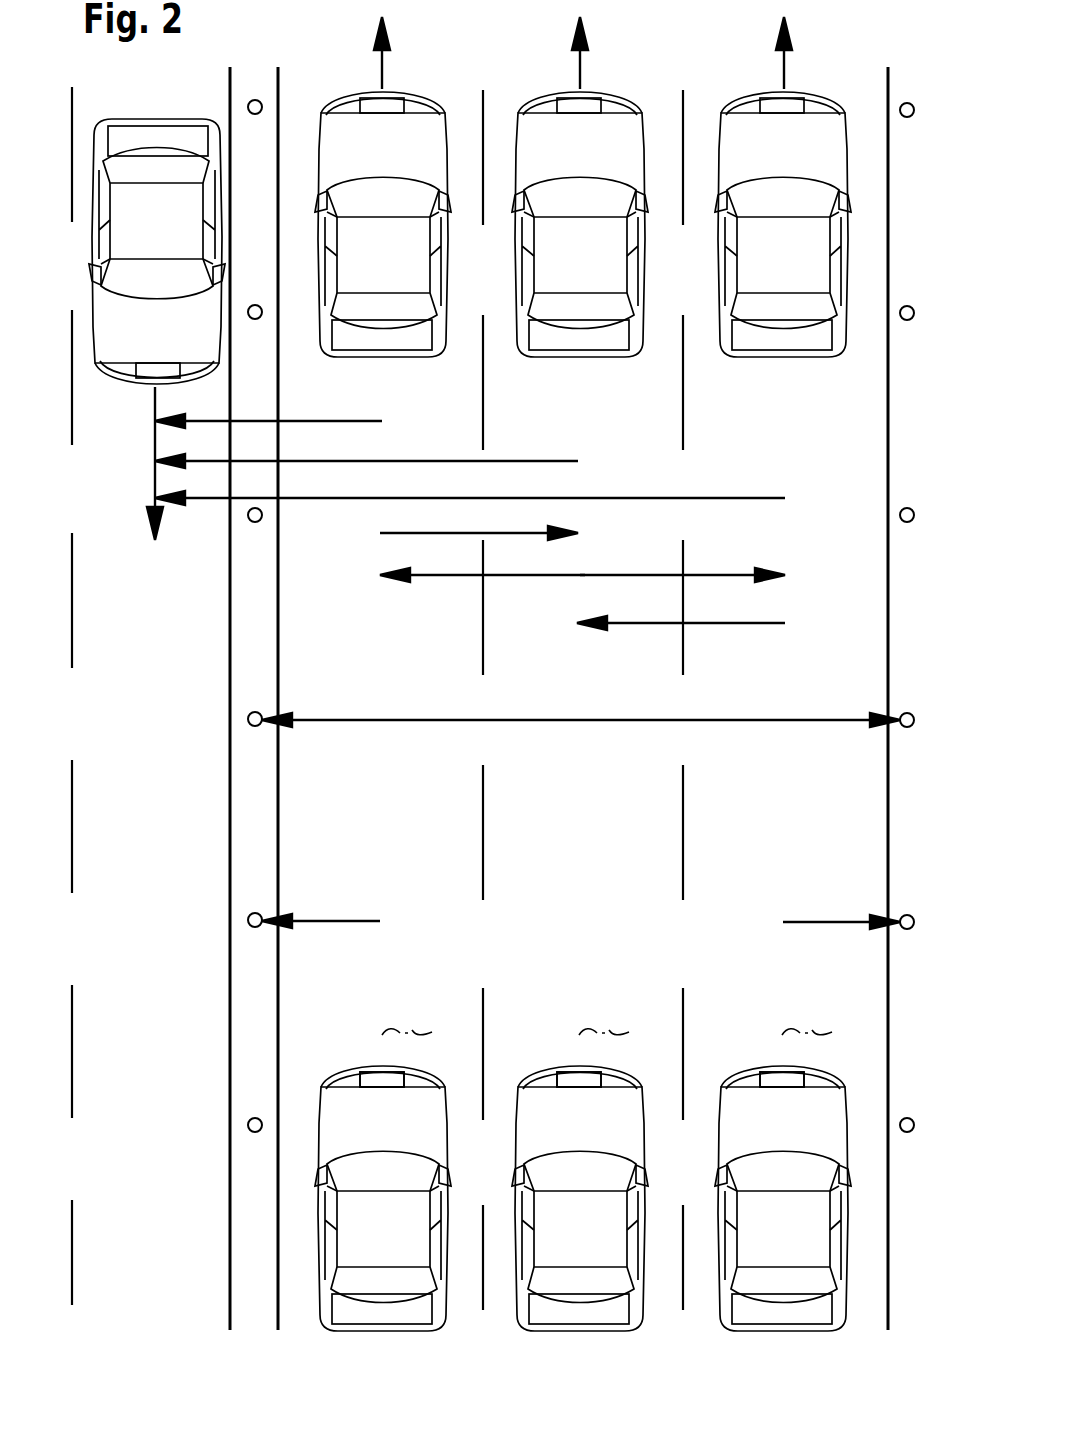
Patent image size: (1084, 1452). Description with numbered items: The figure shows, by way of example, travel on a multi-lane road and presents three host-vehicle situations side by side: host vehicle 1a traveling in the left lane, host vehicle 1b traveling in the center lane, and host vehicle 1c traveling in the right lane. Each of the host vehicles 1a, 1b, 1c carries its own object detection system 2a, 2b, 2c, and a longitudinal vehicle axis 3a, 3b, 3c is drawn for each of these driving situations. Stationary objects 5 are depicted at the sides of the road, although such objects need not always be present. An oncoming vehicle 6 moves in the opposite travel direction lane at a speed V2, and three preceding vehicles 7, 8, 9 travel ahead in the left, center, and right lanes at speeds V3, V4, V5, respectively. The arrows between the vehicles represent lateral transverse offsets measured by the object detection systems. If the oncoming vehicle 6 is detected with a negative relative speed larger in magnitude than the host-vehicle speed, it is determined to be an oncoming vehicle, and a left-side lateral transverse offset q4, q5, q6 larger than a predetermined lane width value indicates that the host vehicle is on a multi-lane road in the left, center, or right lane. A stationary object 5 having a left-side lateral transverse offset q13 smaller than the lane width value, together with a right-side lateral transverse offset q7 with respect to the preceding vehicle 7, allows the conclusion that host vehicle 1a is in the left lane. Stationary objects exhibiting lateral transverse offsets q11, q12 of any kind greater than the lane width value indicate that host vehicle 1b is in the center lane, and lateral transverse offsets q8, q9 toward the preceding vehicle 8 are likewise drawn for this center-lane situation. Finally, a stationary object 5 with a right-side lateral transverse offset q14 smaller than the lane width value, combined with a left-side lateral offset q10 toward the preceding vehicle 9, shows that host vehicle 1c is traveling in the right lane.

The host vehicle 1a is at (368, 1250).
The host vehicle 1b is at (565, 1250).
The host vehicle 1c is at (768, 1250).
The object detection system 2a is at (368, 1083).
The object detection system 2b is at (565, 1083).
The object detection system 2c is at (768, 1083).
The longitudinal vehicle axis 3a is at (423, 1030).
The longitudinal vehicle axis 3b is at (620, 1030).
The longitudinal vehicle axis 3c is at (823, 1030).
The stationary object 5 is at (256, 354).
The oncoming vehicle 6 is at (170, 230).
The preceding vehicle 7 is at (367, 273).
The preceding vehicle 8 is at (564, 273).
The preceding vehicle 9 is at (767, 273).
The speed of oncoming vehicle V2 is at (137, 463).
The speed of preceding vehicle V3 is at (364, 53).
The speed of preceding vehicle V4 is at (562, 53).
The speed of preceding vehicle V5 is at (766, 53).
The left-side lateral transverse offset q4 is at (268, 407).
The left-side lateral transverse offset q5 is at (366, 447).
The left-side lateral transverse offset q6 is at (470, 484).
The right-side lateral transverse offset q7 is at (479, 521).
The lateral distance q8 is at (482, 562).
The lateral distance q9 is at (682, 562).
The left-side lateral offset q10 is at (681, 609).
The lateral transverse offset q11 is at (421, 706).
The lateral transverse offset q12 is at (740, 706).
The left-side lateral transverse offset q13 is at (321, 908).
The right-side lateral transverse offset q14 is at (841, 908).